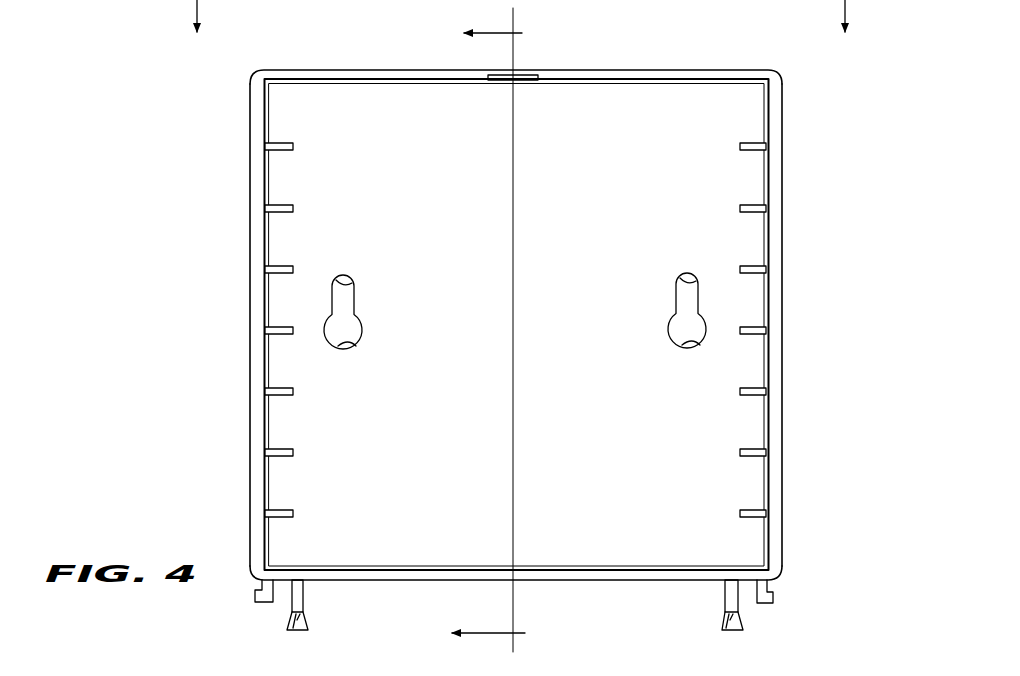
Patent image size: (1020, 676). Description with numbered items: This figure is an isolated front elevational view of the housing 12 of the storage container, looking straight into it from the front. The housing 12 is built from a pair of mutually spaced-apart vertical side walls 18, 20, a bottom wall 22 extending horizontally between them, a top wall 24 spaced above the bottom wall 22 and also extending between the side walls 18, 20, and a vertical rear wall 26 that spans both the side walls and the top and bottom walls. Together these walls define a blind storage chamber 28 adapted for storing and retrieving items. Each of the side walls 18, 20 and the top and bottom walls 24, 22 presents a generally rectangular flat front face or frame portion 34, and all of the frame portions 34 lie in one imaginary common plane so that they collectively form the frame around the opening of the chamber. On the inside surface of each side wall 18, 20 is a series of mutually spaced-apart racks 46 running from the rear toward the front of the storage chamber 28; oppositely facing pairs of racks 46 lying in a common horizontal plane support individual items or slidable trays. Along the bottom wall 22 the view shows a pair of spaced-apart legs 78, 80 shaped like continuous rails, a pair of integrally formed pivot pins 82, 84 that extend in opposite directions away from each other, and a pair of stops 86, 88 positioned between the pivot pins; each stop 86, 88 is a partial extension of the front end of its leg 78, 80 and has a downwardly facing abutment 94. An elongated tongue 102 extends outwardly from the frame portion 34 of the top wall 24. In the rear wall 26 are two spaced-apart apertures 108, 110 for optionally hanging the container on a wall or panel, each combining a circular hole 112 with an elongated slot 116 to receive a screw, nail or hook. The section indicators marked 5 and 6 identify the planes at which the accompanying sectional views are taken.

The housing 12 is at (520, 323).
The vertical side wall 18 is at (250, 249).
The vertical side wall 20 is at (783, 292).
The bottom wall 22 is at (412, 582).
The top wall 24 is at (355, 70).
The rear wall 26 is at (573, 668).
The storage chamber 28 is at (568, 345).
The frame portion 34 is at (416, 79).
The racks 46 is at (294, 146).
The leg 78 is at (469, 625).
The leg 80 is at (732, 622).
The pivot pin 82 is at (262, 602).
The pivot pin 84 is at (773, 598).
The stop 86 is at (300, 598).
The stop 88 is at (728, 598).
The downwardly-facing abutment 94 is at (308, 622).
The elongated tongue 102 is at (528, 74).
The aperture 108 is at (362, 311).
The aperture 110 is at (671, 311).
The circular hole 112 is at (350, 348).
The elongated slot 116 is at (352, 283).
The section line 5- 5 is at (521, 31).
The section line 6- 6 is at (504, 330).